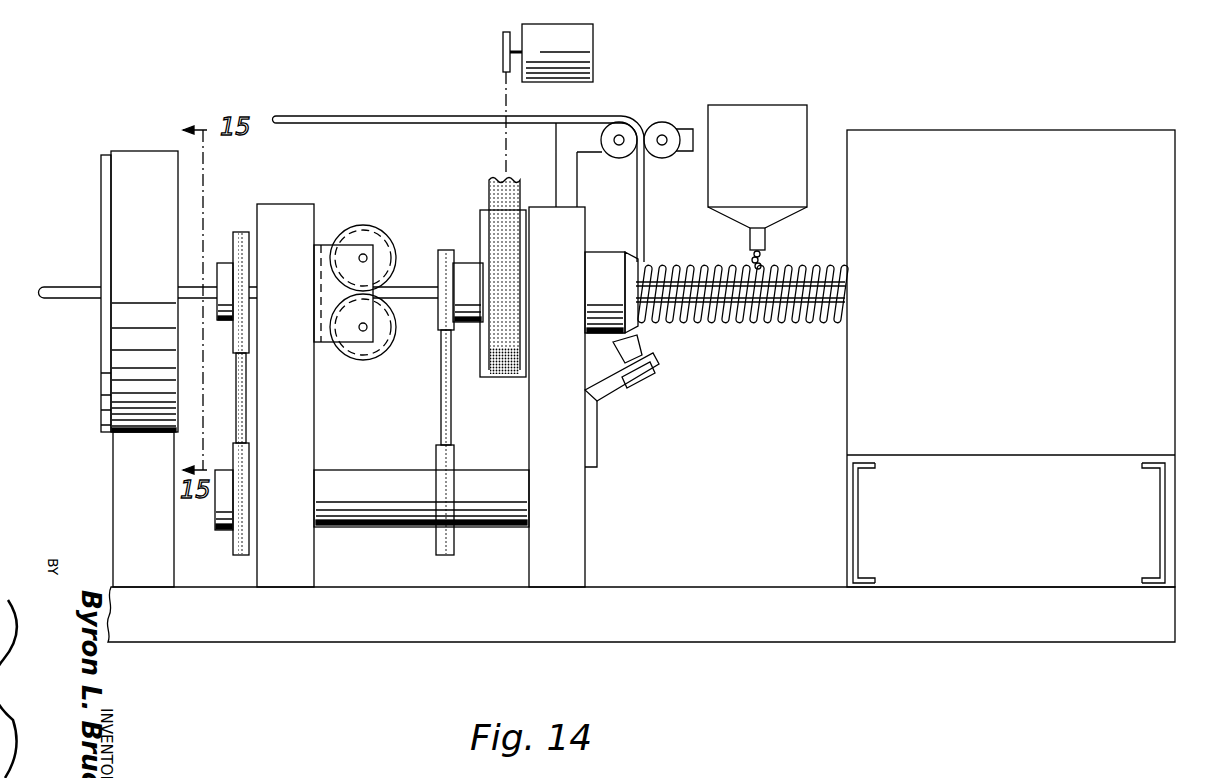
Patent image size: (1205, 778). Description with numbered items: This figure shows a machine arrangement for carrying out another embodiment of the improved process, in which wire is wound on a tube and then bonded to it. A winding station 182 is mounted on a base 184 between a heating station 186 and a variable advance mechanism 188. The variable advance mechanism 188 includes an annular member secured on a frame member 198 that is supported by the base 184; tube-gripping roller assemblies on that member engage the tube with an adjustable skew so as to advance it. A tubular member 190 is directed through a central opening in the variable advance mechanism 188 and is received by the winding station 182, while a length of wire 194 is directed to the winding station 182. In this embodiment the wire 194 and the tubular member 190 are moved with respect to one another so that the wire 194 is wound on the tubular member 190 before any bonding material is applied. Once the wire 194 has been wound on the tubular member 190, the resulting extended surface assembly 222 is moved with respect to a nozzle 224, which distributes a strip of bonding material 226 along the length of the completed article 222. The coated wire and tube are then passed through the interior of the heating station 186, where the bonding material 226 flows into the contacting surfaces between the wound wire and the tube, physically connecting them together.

The winding station 182 is at (625, 183).
The base 184 is at (684, 569).
The heating station 186 is at (996, 130).
The variable advance mechanism 188 is at (141, 151).
The tubular member 190 is at (72, 293).
The wire 194 is at (367, 123).
The frame member 198 is at (122, 510).
The extended surface assembly 222 is at (705, 322).
The nozzle 224 is at (770, 239).
The bonding material 226 is at (750, 262).